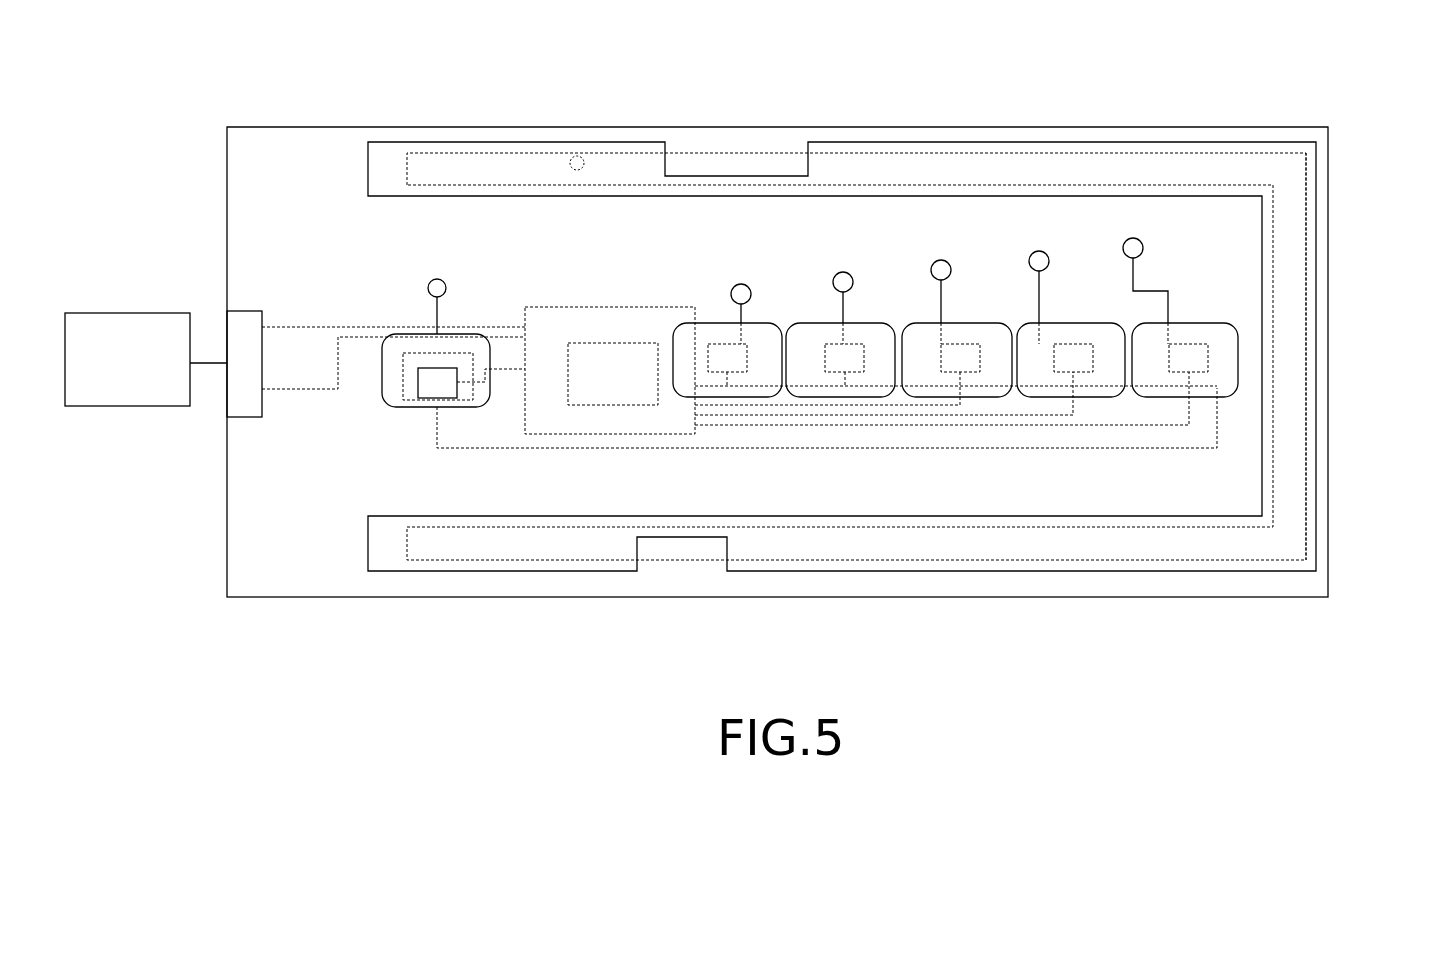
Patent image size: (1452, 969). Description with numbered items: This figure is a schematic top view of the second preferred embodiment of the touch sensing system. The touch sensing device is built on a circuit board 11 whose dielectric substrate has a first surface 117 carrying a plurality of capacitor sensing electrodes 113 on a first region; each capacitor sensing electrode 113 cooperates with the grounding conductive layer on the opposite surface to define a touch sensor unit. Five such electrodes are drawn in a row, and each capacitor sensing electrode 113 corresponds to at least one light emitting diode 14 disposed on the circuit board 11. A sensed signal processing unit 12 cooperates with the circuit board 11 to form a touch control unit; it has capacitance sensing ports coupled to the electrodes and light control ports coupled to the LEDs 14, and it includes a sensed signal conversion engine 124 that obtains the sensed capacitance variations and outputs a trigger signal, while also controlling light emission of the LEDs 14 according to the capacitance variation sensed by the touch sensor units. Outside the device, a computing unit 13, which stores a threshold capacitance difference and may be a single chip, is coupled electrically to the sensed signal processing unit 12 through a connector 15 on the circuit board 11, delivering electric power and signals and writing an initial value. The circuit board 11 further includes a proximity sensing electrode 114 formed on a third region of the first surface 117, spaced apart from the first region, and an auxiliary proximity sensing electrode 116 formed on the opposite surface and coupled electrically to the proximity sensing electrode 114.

The circuit board 11 is at (240, 112).
The first surface 117 is at (322, 153).
The sensed signal processing unit 12 is at (635, 307).
The sensed signal conversion engine 124 is at (642, 355).
The capacitor sensing electrode 113 is at (868, 333).
The proximity sensing electrode 114 is at (1083, 150).
The computing unit 13 is at (120, 338).
The connector 15 is at (245, 327).
The auxiliary proximity sensing electrode 116 is at (1307, 301).
The light emitting diode 14 is at (968, 360).